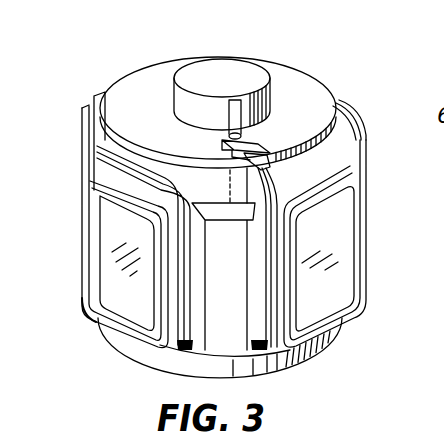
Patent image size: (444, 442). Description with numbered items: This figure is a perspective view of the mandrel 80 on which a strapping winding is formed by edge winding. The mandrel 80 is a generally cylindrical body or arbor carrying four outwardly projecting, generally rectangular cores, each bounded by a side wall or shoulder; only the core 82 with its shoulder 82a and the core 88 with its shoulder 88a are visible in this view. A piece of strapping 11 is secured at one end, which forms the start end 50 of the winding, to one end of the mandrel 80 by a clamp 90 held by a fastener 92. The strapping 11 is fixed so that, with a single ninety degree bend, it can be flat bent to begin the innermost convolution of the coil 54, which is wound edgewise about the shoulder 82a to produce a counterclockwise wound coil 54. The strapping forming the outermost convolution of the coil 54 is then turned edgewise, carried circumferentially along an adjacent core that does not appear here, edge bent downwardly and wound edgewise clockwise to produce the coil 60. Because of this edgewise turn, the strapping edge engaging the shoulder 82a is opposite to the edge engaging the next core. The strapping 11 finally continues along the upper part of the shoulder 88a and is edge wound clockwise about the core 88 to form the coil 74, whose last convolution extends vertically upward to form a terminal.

The mandrel 80 is at (162, 56).
The fastener 92 is at (231, 130).
The clamp 90 is at (247, 148).
The start end 50 is at (242, 156).
The strapping 11 is at (274, 151).
The coil 60 is at (360, 110).
The core 82 is at (348, 246).
The side wall or shoulder 82a is at (316, 191).
The coil 54 is at (341, 330).
The core 88 is at (97, 254).
The side wall or shoulder 88a is at (166, 234).
The coil 74 is at (96, 324).